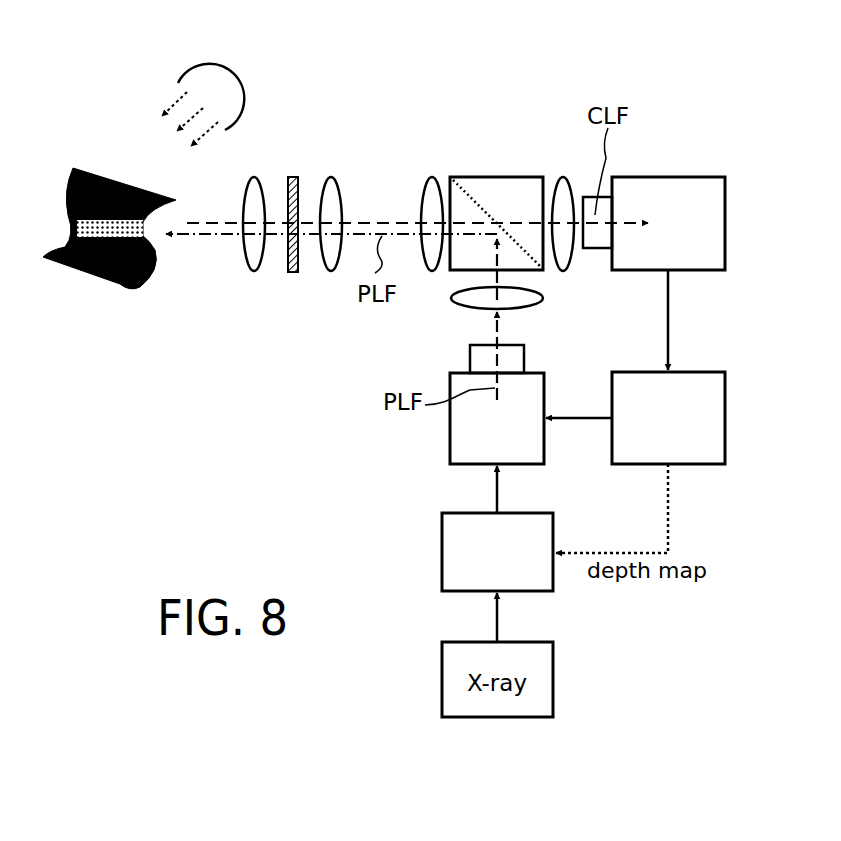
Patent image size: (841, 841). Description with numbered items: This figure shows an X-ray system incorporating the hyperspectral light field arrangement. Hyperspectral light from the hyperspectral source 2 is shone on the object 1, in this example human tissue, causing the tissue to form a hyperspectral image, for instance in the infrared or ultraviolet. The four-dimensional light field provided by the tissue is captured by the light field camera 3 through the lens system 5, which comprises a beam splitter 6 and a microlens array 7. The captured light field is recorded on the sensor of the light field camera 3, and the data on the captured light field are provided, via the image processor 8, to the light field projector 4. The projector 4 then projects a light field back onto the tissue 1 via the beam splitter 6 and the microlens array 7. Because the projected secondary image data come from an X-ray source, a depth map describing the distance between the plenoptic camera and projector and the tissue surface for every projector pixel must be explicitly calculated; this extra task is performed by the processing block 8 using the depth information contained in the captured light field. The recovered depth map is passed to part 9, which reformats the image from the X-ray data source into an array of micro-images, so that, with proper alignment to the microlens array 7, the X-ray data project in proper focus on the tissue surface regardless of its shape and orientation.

The object 1 is at (86, 167).
The hyperspectral source 2 is at (208, 71).
The light field camera 3 is at (659, 237).
The light field projector 4 is at (488, 432).
The lens system 5 is at (254, 177).
The beam splitter 6 is at (503, 195).
The microlens array 7 is at (292, 177).
The image processor 8 is at (659, 432).
The part 9 is at (488, 564).